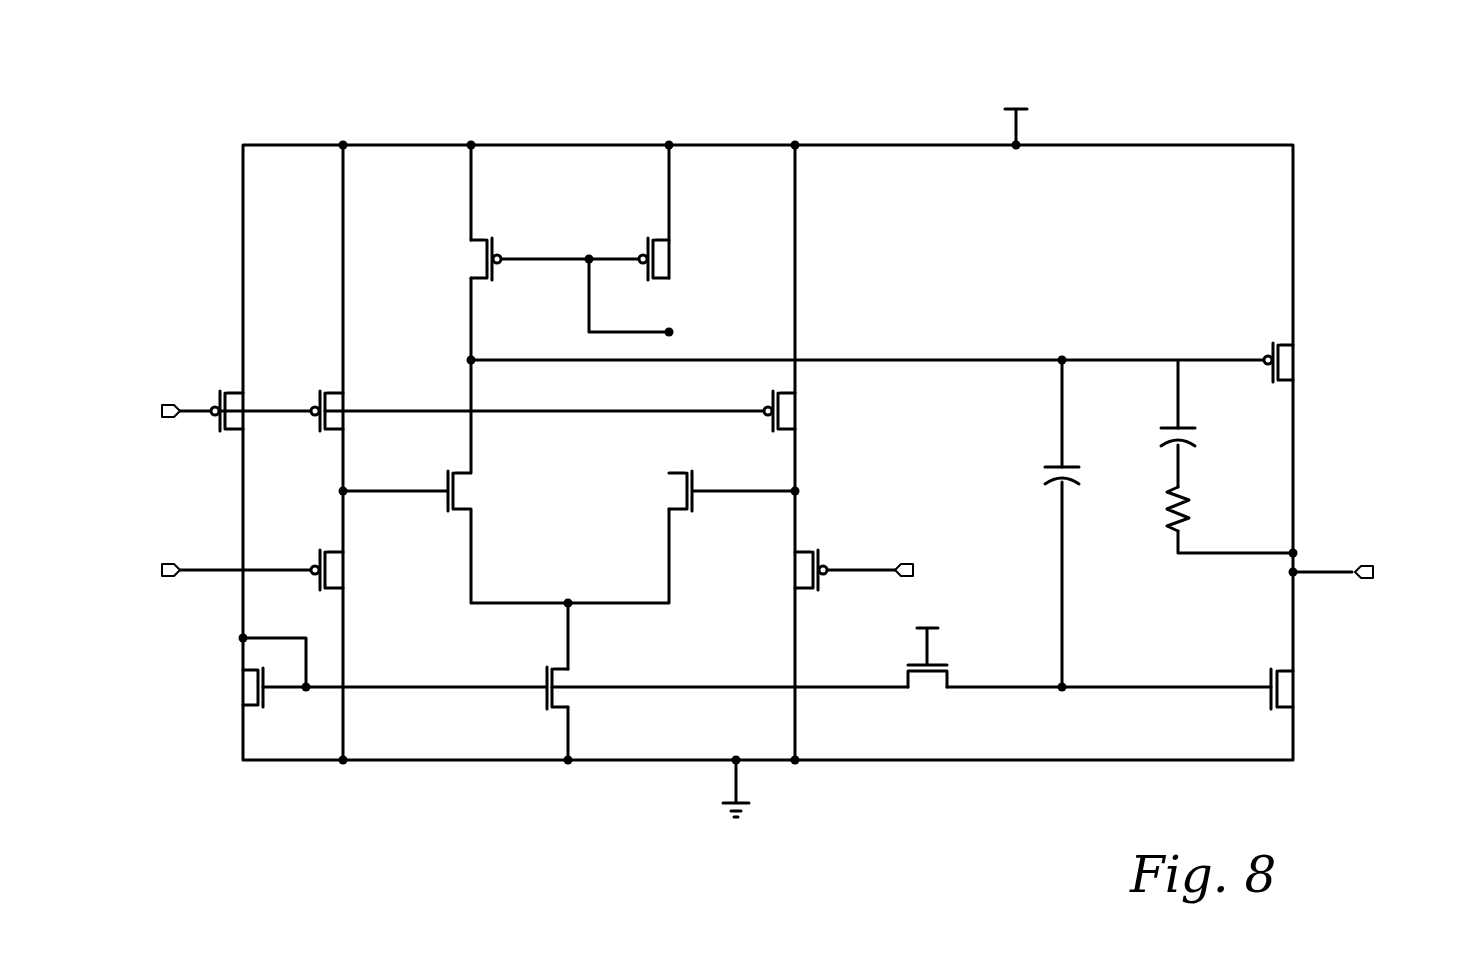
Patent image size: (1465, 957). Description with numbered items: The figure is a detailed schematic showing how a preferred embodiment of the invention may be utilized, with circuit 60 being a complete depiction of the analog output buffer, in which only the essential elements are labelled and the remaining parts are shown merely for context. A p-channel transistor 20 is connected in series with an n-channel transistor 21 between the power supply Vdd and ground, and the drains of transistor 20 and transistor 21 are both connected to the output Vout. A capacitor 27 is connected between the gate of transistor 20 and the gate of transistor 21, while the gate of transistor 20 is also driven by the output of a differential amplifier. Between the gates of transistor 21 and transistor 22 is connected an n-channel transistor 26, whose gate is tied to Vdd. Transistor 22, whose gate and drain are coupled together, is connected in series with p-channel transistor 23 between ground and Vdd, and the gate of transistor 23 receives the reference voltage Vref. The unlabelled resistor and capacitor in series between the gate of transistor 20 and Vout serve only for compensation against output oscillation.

The circuit 60 is at (469, 104).
The p-channel transistor 20 is at (1297, 362).
The n-channel transistor 21 is at (1295, 687).
The transistor 22 is at (242, 687).
The p-channel transistor 23 is at (242, 420).
The n-channel transistor 26 is at (929, 685).
The capacitor 27 is at (1078, 477).